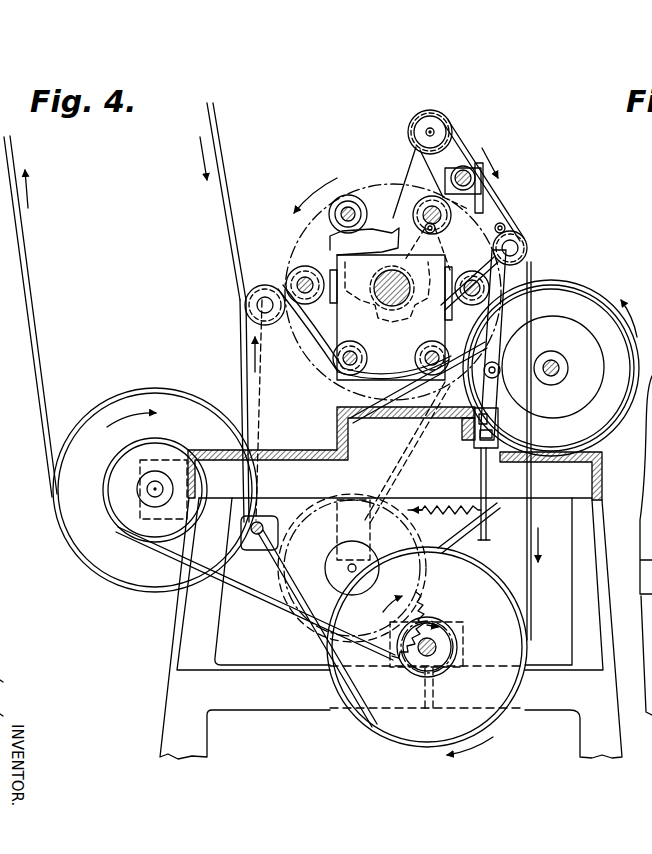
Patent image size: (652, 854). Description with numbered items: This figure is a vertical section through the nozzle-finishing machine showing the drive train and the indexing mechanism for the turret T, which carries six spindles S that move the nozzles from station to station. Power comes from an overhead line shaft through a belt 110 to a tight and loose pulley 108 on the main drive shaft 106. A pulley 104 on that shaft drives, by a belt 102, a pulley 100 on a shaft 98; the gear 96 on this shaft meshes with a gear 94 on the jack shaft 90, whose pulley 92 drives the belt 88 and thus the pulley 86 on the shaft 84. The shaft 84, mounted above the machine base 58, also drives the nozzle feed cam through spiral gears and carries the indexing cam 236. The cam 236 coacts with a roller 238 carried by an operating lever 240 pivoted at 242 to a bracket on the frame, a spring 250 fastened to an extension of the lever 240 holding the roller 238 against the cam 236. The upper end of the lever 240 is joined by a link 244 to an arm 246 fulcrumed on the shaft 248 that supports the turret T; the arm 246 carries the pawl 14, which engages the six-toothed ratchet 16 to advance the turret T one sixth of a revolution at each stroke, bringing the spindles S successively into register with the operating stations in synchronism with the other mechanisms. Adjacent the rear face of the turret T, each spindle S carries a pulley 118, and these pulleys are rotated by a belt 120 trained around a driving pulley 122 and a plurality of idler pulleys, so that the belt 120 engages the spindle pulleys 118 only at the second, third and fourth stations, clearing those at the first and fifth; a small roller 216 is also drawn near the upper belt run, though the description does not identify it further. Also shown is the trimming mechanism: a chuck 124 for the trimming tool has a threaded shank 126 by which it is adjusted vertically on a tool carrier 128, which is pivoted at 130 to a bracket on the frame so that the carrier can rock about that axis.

The pawl 14 is at (525, 232).
The ratchet 16 is at (330, 252).
The machine base 58 is at (290, 450).
The shaft 84 is at (568, 368).
The pulley 86 is at (560, 296).
The belt 88 is at (553, 470).
The jack shaft 90 is at (348, 568).
The pulley 92 is at (338, 582).
The gear 94 is at (421, 593).
The gear 96 is at (440, 612).
The shaft 98 is at (437, 645).
The pulley 100 is at (405, 658).
The belt 102 is at (249, 596).
The pulley 104 is at (133, 534).
The main drive shaft 106 is at (147, 489).
The tight and loose pulley 108 is at (151, 390).
The belt 110 is at (36, 346).
The pulleys 118 is at (334, 217).
The belt 120 is at (527, 523).
The driving pulley 122 is at (405, 723).
The chuck 124 is at (528, 247).
The threaded shank 126 is at (452, 130).
The tool carrier 128 is at (245, 305).
The pivot 130 is at (260, 518).
The roller 216 is at (466, 170).
The cam 236 is at (593, 398).
The roller 238 is at (500, 388).
The operating lever 240 is at (474, 412).
The pivot 242 is at (482, 446).
The link 244 is at (488, 218).
The arm 246 is at (406, 212).
The shaft 248 is at (384, 308).
The spring 250 is at (452, 492).
The spindles S is at (302, 285).
The turret T is at (300, 350).